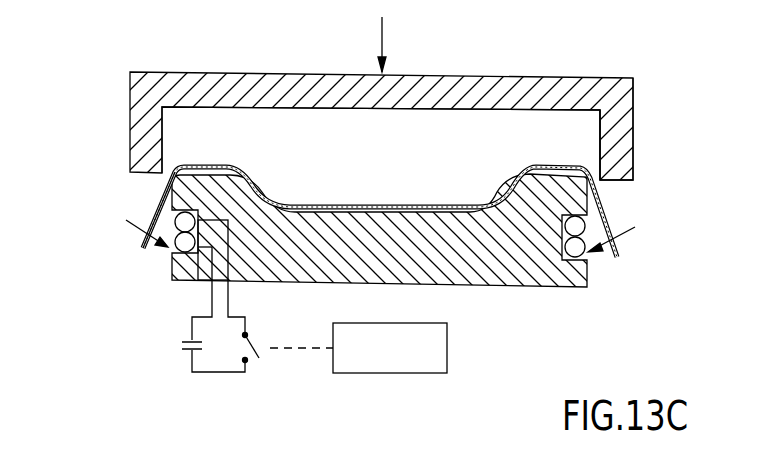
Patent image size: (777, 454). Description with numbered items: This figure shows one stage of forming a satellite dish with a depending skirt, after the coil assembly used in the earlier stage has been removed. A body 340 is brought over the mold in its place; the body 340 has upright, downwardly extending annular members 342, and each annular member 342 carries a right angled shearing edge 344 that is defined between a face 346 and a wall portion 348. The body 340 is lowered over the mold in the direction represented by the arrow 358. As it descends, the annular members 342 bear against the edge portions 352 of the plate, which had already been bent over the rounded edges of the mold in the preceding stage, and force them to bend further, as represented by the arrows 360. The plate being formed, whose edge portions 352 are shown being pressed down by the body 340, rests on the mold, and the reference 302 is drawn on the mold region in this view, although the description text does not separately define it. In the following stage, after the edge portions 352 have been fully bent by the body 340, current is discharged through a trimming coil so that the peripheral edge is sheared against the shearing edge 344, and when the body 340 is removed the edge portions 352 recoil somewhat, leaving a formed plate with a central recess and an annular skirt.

The chuck body 302 is at (379, 253).
The body 340 is at (480, 90).
The annular members 342 is at (617, 162).
The right angled shearing edge 344 is at (620, 211).
The face 346 is at (598, 160).
The wall portion 348 is at (620, 185).
The edge portions 352 is at (153, 217).
The arrow 358 is at (377, 43).
The arrows 360 is at (130, 235).